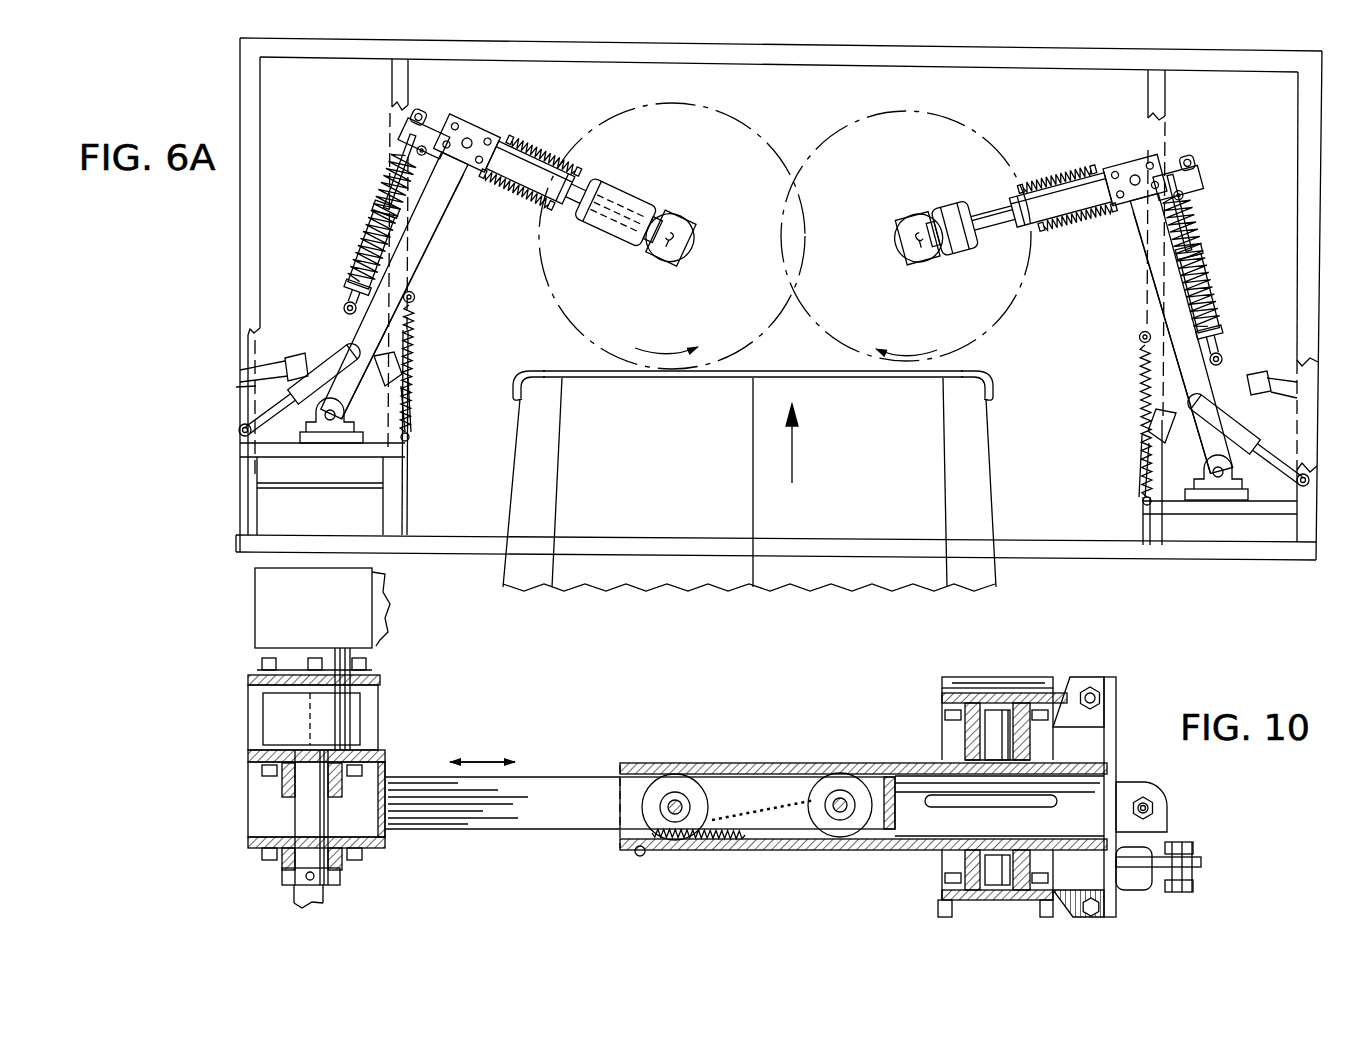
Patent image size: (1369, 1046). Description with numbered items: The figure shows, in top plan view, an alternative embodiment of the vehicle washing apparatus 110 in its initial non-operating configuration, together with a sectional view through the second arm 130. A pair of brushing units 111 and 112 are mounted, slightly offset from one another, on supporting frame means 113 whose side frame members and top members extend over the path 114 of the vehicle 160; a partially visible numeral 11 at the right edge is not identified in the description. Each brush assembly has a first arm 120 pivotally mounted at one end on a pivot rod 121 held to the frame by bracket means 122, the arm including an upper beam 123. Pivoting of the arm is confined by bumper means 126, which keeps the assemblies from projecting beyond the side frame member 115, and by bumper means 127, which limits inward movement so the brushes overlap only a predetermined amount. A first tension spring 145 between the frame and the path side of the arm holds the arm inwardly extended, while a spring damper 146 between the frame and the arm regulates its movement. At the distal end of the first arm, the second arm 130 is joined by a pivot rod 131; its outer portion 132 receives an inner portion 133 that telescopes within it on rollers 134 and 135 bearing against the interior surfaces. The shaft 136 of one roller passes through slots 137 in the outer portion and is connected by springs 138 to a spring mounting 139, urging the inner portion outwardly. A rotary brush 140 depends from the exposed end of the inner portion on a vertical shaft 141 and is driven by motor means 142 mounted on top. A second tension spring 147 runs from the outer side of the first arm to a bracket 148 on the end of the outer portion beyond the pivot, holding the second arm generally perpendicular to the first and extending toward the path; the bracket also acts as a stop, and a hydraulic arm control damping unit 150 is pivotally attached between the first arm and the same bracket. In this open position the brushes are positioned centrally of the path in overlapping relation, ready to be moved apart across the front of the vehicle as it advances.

In FIG. 6A, the vehicle washing apparatus 110 is at (238, 234).
In FIG. 6A, the brushing unit 111 is at (726, 150).
In FIG. 6A, the brushing unit 112 is at (968, 148).
In FIG. 6A, the supporting frame means 113 is at (622, 58).
In FIG. 6A, the vehicle path 114 is at (794, 446).
In FIG. 6A, the side frame member 115 is at (243, 266).
In FIG. 6A, the first arm 120 is at (452, 244).
In FIG. 10, the first arm 120 is at (996, 674).
In FIG. 6A, the pivot rod 121 is at (326, 421).
In FIG. 6A, the bracket means 122 is at (338, 434).
In FIG. 6A, the upper beam 123 is at (444, 217).
In FIG. 6A, the bumper means 126 is at (288, 352).
In FIG. 6A, the bumper means 127 is at (404, 364).
In FIG. 6A, the second arm 130 is at (510, 148).
In FIG. 10, the second arm 130 is at (735, 760).
In FIG. 6A, the pivot rod 131 is at (470, 138).
In FIG. 10, the pivot rod 131 is at (962, 740).
In FIG. 6A, the outer portion 132 is at (1113, 212).
In FIG. 10, the outer portion 132 is at (785, 770).
In FIG. 6A, the inner portion 133 is at (996, 205).
In FIG. 10, the inner portion 133 is at (540, 780).
In FIG. 10, the roller 134 is at (852, 832).
In FIG. 10, the roller 135 is at (676, 783).
In FIG. 10, the shaft 136 is at (842, 793).
In FIG. 10, the slots 137 is at (990, 806).
In FIG. 6A, the springs 138 is at (548, 160).
In FIG. 10, the springs 138 is at (665, 850).
In FIG. 6A, the spring mounting 139 is at (590, 178).
In FIG. 10, the spring mounting 139 is at (634, 852).
In FIG. 6A, the rotary brush 140 is at (845, 132).
In FIG. 6A, the vertical shaft 141 is at (687, 255).
In FIG. 10, the vertical shaft 141 is at (300, 807).
In FIG. 6A, the motor means 142 is at (642, 205).
In FIG. 10, the motor means 142 is at (262, 605).
In FIG. 6A, the first tension spring 145 is at (418, 325).
In FIG. 6A, the spring damper 146 is at (338, 366).
In FIG. 6A, the second tension spring 147 is at (368, 247).
In FIG. 6A, the bracket 148 is at (420, 118).
In FIG. 10, the bracket 148 is at (1120, 712).
In FIG. 6A, the hydraulic arm control damping unit 150 is at (366, 217).
In FIG. 10, the hydraulic arm control damping unit 150 is at (1172, 807).
In FIG. 6A, the vehicle 160 is at (619, 451).
In FIG. 6A, the wall 11 is at (1318, 173).